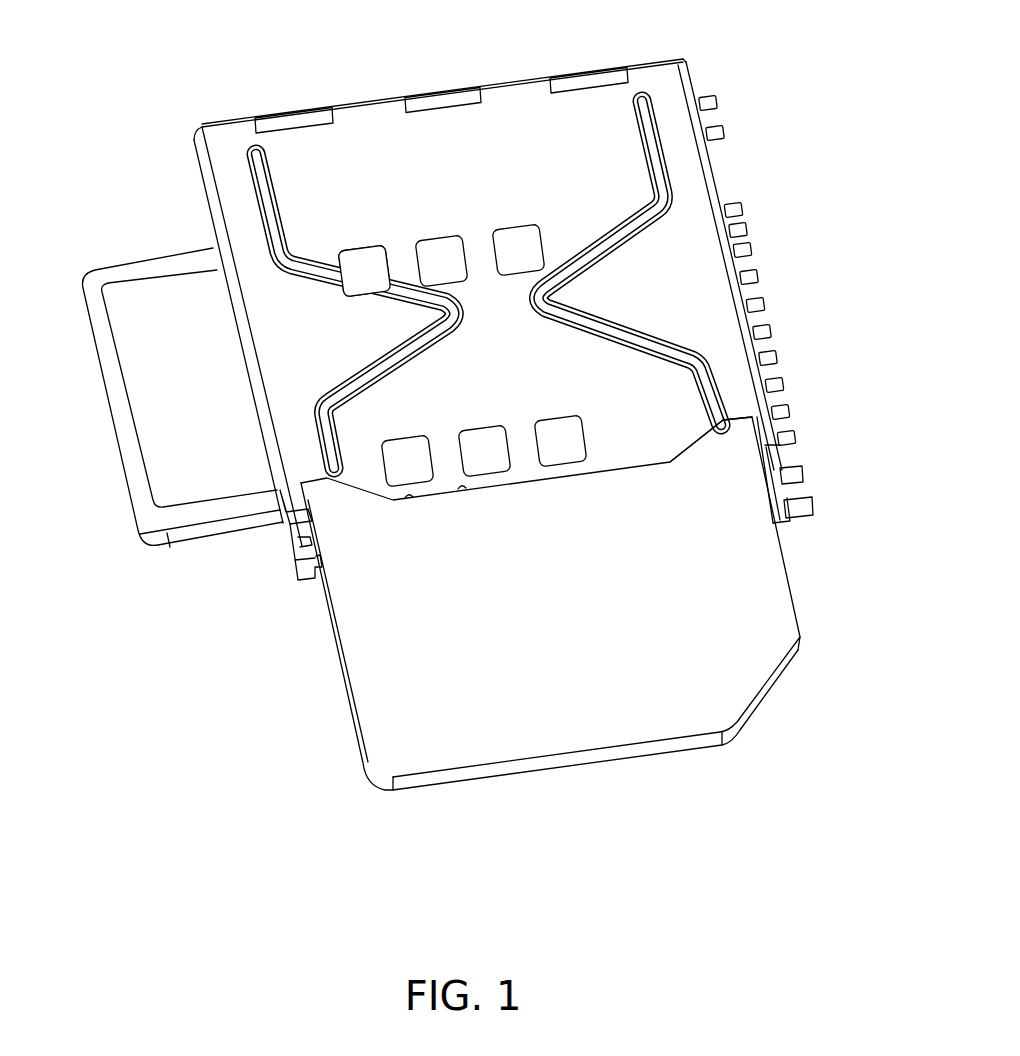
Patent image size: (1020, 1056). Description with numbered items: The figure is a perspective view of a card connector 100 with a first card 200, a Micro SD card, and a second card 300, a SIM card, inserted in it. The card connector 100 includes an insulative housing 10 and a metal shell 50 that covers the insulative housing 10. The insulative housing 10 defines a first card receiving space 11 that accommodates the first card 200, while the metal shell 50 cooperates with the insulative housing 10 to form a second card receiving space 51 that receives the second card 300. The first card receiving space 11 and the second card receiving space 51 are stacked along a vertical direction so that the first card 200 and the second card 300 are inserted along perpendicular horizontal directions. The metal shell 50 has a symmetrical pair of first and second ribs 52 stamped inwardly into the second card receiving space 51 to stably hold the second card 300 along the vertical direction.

The card connector 100 is at (496, 415).
The metal shell 50 is at (607, 125).
The first and second ribs 52 is at (262, 183).
The second card receiving space 51 is at (705, 467).
The second card 300 is at (547, 677).
The insulative housing 10 is at (290, 543).
The first card 200 is at (154, 445).
The first card receiving space 11 is at (224, 306).